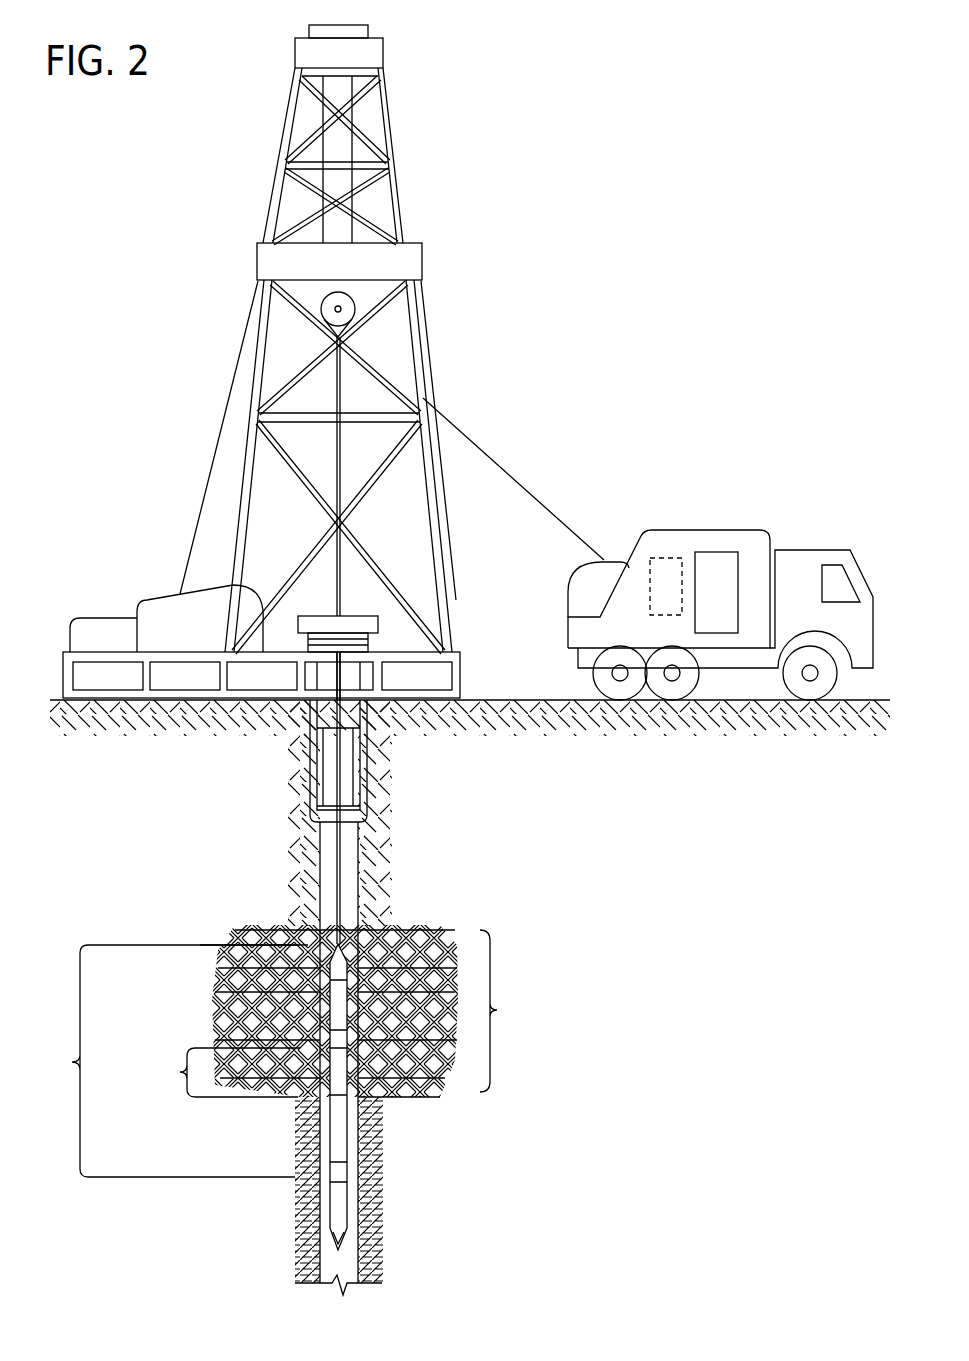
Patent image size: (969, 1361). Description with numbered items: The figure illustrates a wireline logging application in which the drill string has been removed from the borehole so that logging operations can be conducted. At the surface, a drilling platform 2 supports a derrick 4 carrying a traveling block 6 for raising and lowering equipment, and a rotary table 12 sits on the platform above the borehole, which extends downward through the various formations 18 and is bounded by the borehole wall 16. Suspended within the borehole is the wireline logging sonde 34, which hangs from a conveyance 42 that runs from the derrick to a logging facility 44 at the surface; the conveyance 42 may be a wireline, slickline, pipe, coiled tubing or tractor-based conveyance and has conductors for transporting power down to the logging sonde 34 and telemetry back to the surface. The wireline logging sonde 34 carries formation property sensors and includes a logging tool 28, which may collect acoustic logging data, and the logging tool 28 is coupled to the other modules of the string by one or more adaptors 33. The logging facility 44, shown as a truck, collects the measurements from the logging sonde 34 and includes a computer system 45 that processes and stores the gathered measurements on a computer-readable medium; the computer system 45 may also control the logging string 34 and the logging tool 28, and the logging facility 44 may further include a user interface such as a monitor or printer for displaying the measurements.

The drilling platform 2 is at (63, 672).
The derrick 4 is at (397, 157).
The traveling block 6 is at (348, 311).
The rotary table 12 is at (355, 615).
The borehole wall 16 is at (318, 856).
The formations 18 is at (497, 1010).
The logging tool 28 is at (180, 1072).
The adaptors 33 is at (338, 1035).
The wireline logging sonde 34 is at (72, 1062).
The conveyance 42 is at (462, 430).
The logging facility 44 is at (741, 530).
The computer system 45 is at (660, 558).